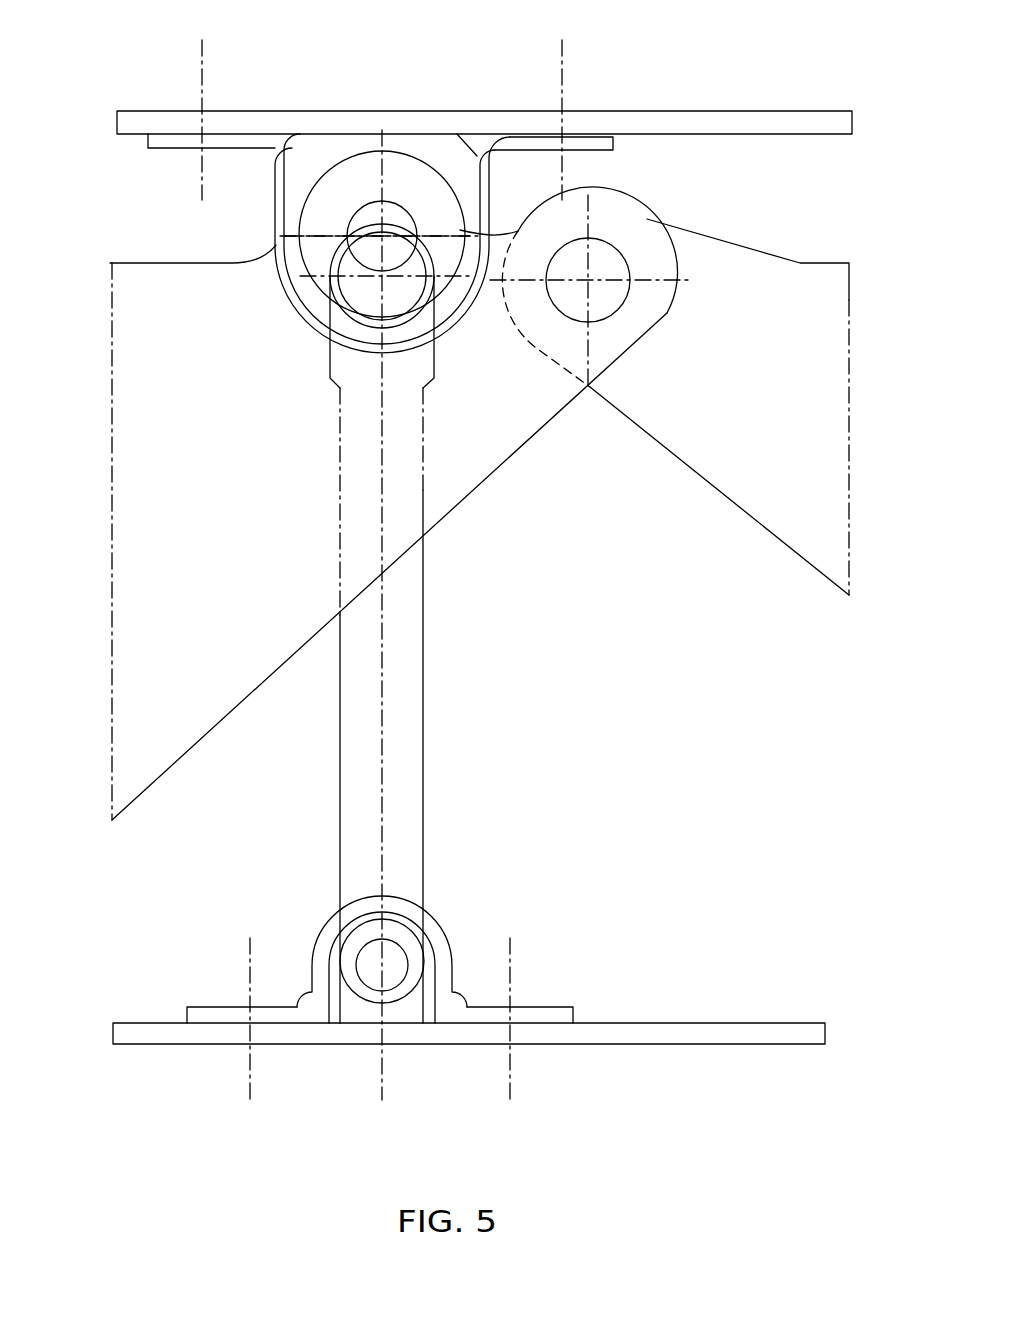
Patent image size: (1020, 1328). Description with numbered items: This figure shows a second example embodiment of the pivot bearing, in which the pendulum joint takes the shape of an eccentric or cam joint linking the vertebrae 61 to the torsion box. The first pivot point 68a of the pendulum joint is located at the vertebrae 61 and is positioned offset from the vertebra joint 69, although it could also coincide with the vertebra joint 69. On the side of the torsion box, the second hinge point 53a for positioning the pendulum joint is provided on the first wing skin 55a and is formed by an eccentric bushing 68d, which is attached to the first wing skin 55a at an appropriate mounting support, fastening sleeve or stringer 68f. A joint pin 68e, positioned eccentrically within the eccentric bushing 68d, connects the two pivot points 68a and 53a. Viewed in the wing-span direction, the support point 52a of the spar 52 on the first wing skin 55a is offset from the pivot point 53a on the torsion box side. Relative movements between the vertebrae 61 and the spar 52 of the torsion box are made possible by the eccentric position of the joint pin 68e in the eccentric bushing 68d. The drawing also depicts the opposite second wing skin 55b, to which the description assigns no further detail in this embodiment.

The spar 52 is at (403, 698).
The support point 52a is at (395, 228).
The second hinge point 53a is at (290, 243).
The first wing skin 55a is at (687, 123).
The lower plate 55b is at (678, 1035).
The vertebrae 61 is at (763, 500).
The first pivot point 68a is at (330, 338).
The eccentric bushing 68d is at (303, 282).
The joint pin 68e is at (400, 300).
The fastening sleeve or stringer 68f is at (228, 134).
The vertebra joint 69 is at (607, 257).